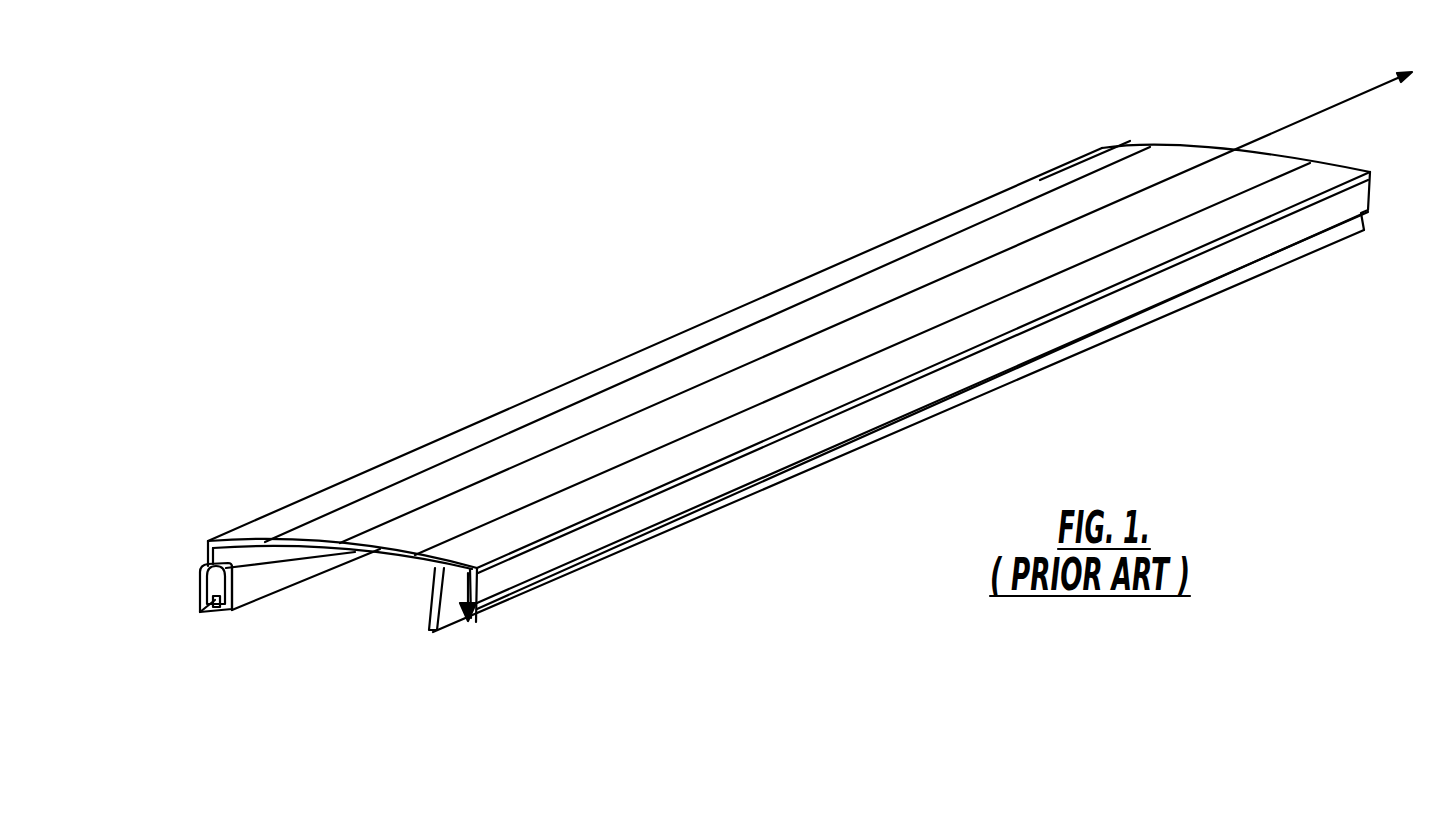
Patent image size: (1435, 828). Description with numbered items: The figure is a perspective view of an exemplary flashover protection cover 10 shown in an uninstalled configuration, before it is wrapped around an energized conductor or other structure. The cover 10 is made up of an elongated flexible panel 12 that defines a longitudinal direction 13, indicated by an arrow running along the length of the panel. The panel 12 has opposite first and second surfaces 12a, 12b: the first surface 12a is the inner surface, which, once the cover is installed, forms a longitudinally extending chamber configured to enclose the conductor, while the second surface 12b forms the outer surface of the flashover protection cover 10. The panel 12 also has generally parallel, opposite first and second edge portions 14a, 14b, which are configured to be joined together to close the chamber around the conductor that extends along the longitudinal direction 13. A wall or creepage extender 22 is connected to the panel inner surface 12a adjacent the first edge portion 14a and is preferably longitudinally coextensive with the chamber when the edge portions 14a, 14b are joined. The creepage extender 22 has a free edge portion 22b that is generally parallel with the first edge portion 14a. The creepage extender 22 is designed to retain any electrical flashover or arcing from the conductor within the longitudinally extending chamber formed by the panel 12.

The flashover protection cover 10 is at (762, 382).
The elongated flexible panel 12 is at (789, 354).
The first surface 12a is at (383, 557).
The second surface 12b is at (1055, 217).
The longitudinal direction 13 is at (1352, 100).
The first edge portion 14a is at (479, 590).
The second edge portion 14b is at (203, 564).
The creepage extender 22 is at (345, 619).
The free edge portion 22b is at (428, 634).